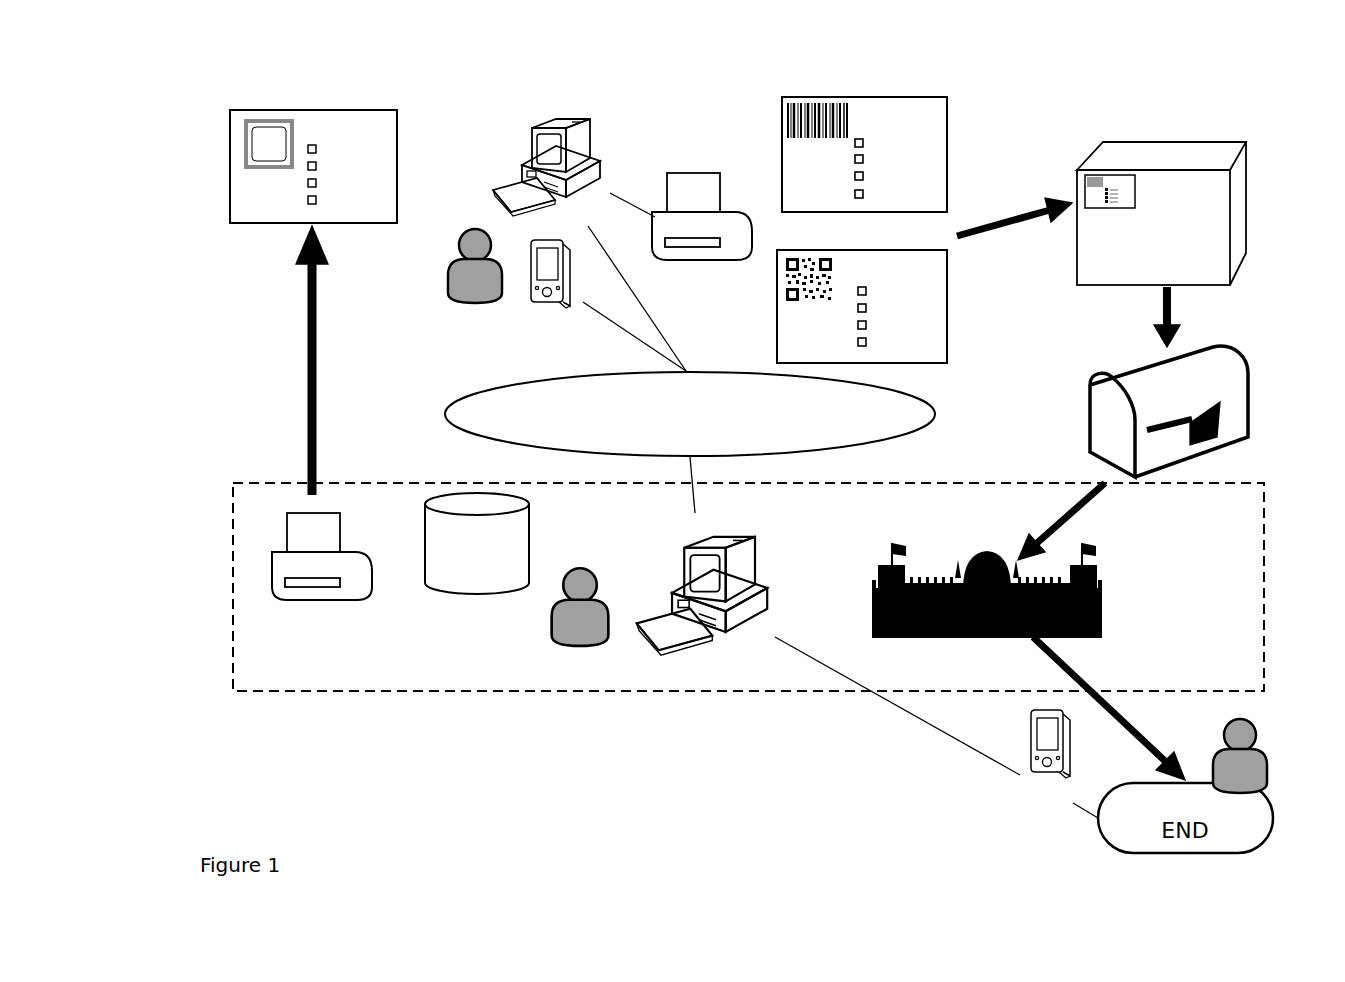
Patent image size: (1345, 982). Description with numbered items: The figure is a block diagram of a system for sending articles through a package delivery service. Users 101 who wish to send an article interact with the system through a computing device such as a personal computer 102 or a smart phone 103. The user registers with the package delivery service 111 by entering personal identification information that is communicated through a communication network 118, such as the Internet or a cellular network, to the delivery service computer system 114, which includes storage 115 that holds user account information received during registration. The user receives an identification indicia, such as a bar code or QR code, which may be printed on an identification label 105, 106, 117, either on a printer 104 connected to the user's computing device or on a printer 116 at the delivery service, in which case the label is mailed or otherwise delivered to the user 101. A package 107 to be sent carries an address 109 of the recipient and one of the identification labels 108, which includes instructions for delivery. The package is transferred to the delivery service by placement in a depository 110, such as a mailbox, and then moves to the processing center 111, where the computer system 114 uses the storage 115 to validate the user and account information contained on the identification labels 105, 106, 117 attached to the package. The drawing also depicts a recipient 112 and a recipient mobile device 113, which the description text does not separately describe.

The users 101 is at (458, 286).
The personal computer 102 is at (568, 112).
The smart phone 103 is at (562, 302).
The printer 104 is at (704, 172).
The identification label 105 is at (881, 141).
The identification label 106 is at (883, 306).
The package 107 is at (1196, 220).
The identification label 108 is at (1135, 188).
The address 109 is at (1178, 253).
The depository 110 is at (1248, 395).
The package delivery service 111 is at (1103, 605).
The recipient 112 is at (1285, 782).
The recipient mobile device 113 is at (1020, 803).
The delivery service computer system 114 is at (720, 682).
The storage 115 is at (473, 598).
The printer 116 is at (298, 600).
The identification label 117 is at (286, 302).
The communication network 118 is at (690, 414).